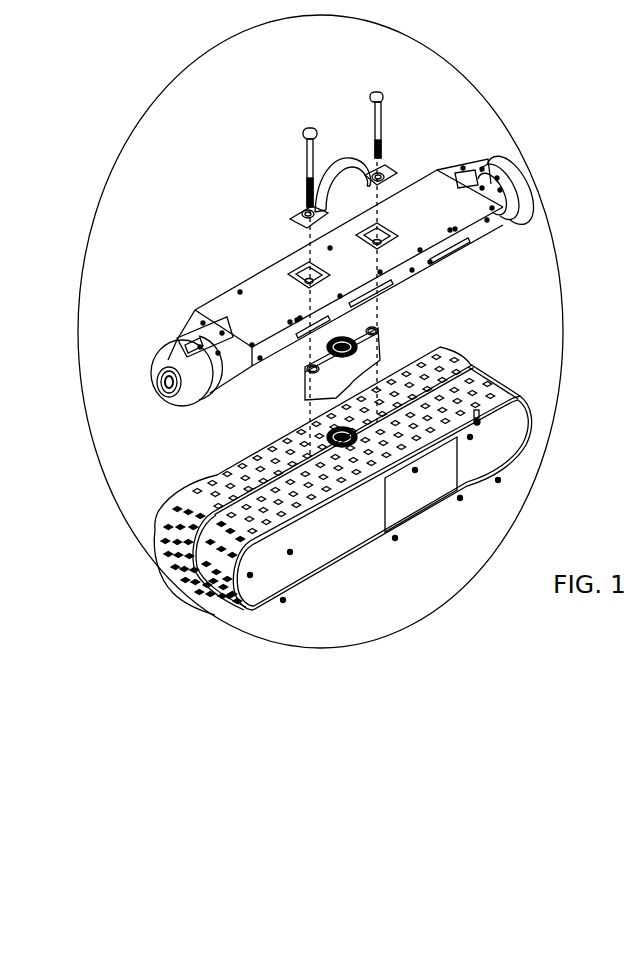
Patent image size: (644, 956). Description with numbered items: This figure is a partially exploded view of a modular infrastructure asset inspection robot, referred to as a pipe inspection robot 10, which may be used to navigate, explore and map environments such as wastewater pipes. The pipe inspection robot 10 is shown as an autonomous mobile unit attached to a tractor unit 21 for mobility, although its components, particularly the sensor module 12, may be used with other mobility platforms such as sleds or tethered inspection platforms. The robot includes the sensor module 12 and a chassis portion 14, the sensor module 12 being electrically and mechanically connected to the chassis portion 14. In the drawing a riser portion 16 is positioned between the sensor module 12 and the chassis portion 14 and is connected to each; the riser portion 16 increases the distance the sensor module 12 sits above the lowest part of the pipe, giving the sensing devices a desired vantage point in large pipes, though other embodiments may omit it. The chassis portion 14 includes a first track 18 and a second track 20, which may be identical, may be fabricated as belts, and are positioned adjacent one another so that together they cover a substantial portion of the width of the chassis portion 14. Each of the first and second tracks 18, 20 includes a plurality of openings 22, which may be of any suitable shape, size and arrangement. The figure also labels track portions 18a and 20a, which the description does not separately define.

The pipe inspection robot 10 is at (117, 157).
The sensor module 12 is at (257, 303).
The chassis portion 14 is at (268, 568).
The riser portion 16 is at (378, 338).
The first track 18 is at (500, 378).
The first track end 18a is at (222, 546).
The second track 20 is at (467, 357).
The second track end 20a is at (182, 523).
The tractor unit 21 is at (480, 500).
The openings 22 is at (235, 471).